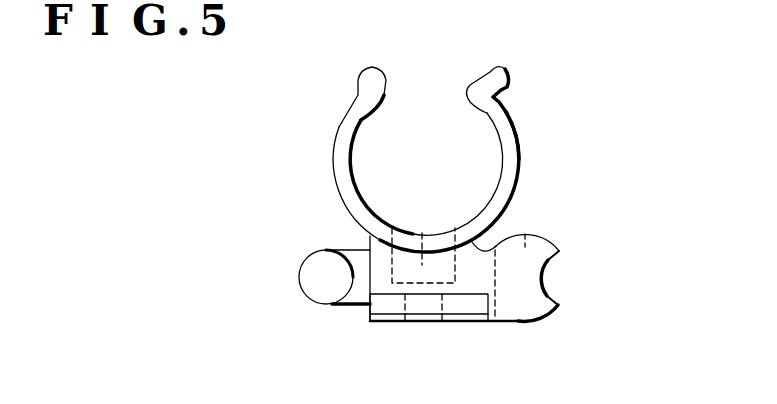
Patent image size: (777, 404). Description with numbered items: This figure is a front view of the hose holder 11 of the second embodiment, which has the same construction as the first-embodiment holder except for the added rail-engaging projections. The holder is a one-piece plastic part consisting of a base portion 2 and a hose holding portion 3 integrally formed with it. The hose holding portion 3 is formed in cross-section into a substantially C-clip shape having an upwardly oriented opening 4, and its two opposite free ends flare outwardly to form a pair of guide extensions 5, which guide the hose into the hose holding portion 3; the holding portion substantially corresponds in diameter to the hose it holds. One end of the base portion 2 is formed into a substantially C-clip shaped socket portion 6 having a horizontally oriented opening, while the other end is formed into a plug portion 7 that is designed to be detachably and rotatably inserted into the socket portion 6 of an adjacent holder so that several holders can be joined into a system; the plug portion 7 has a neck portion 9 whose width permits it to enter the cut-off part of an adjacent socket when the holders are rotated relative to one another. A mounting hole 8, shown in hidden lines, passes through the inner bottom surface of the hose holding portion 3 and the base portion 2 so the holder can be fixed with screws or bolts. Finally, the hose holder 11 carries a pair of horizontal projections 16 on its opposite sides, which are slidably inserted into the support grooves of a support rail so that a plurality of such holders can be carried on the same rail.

The base portion 2 is at (373, 268).
The hose holding portion 3 is at (340, 148).
The opening 4 is at (421, 95).
The guide extensions 5 is at (371, 70).
The socket portion 6 is at (552, 252).
The plug portion 7 is at (317, 292).
The mounting hole 8 is at (422, 233).
The neck portion 9 is at (362, 297).
The hose holder 11 is at (540, 168).
The horizontal projections 16 is at (468, 305).